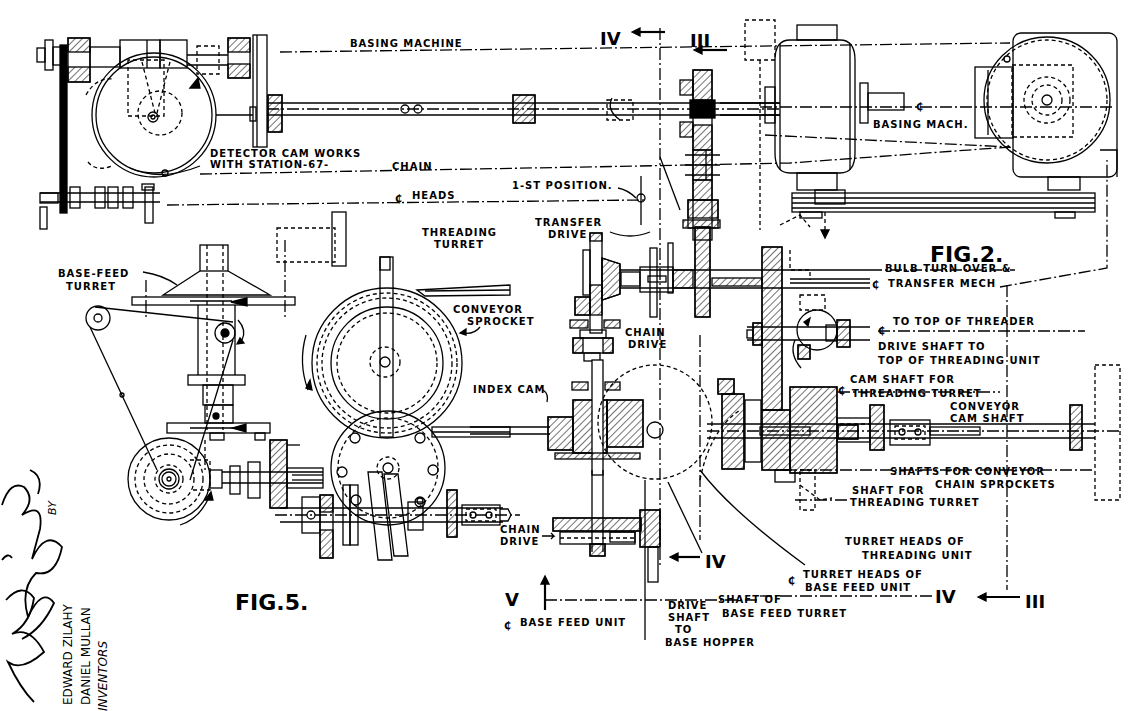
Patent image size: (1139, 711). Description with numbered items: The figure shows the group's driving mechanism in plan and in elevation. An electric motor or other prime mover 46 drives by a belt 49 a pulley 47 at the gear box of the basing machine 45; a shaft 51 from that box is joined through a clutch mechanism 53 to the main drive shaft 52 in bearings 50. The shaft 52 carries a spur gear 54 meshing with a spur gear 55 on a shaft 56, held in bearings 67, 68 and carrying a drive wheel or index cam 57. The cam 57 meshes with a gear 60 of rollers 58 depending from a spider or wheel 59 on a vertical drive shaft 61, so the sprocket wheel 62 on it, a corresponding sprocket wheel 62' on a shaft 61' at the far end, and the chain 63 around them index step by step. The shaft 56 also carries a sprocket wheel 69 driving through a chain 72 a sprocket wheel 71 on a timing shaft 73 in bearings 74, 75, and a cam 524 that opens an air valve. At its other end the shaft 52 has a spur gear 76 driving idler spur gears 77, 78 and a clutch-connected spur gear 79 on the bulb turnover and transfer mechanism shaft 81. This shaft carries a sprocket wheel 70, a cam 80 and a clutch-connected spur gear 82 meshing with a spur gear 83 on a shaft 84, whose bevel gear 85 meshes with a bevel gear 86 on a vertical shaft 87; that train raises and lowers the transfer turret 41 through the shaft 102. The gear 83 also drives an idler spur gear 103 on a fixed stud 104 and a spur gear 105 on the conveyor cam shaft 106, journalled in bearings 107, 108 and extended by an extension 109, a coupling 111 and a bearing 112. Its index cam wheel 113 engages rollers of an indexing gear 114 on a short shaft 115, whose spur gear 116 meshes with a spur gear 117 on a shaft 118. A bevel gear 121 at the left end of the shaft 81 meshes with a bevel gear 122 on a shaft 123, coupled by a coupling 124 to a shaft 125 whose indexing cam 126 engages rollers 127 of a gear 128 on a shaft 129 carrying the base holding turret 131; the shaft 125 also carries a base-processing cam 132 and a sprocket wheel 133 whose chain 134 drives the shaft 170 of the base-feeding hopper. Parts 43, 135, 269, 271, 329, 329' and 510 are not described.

In FIG. 2, the transfer turret 41 is at (703, 475).
In FIG. 2, the base feed unit 43 is at (756, 524).
In FIG. 2, the basing machine 45 is at (496, 68).
In FIG. 2, the electric motor or other prime mover 46 is at (825, 83).
In FIG. 2, the pulley 47 is at (828, 197).
In FIG. 2, the belt 49 is at (946, 190).
In FIG. 2, the bearings 50 is at (283, 123).
In FIG. 2, the shaft 51 is at (898, 94).
In FIG. 2, the main drive shaft 52 is at (594, 100).
In FIG. 2, the clutch mechanism 53 is at (810, 107).
In FIG. 2, the spur gear 54 is at (267, 97).
In FIG. 2, the spur gear 55 is at (253, 76).
In FIG. 2, the shaft 56 is at (236, 70).
In FIG. 2, the drive wheel or index cam 57 is at (93, 93).
In FIG. 2, the rollers 58 is at (164, 88).
In FIG. 2, the spider or wheel 59 is at (206, 100).
In FIG. 2, the gear 60 is at (212, 142).
In FIG. 2, the vertical drive shaft 61 is at (143, 120).
In FIG. 2, the sprocket wheel 62 is at (94, 158).
In FIG. 2, the chain 63 is at (605, 154).
In FIG. 2, the bearing 67 is at (94, 60).
In FIG. 2, the bearing 68 is at (252, 34).
In FIG. 2, the sprocket wheel 69 is at (54, 45).
In FIG. 2, the sprocket wheel 70 is at (629, 233).
In FIG. 2, the sprocket wheel 71 is at (58, 184).
In FIG. 2, the chain 72 is at (58, 119).
In FIG. 2, the timing shaft 73 is at (95, 206).
In FIG. 2, the bearing 74 is at (41, 224).
In FIG. 2, the bearing 75 is at (149, 209).
In FIG. 2, the spur gear 76 is at (693, 135).
In FIG. 2, the idler spur gear 77 is at (720, 170).
In FIG. 2, the idler spur gear 78 is at (676, 230).
In FIG. 2, the spur gear 79 is at (710, 303).
In FIG. 5, the spur gear 79 is at (284, 441).
In FIG. 2, the cam 80 is at (614, 286).
In FIG. 2, the bulb turnover and transfer mechanism shaft 81 is at (725, 273).
In FIG. 5, the bulb turnover and transfer mechanism shaft 81 is at (316, 474).
In FIG. 2, the spur gear 82 is at (777, 131).
In FIG. 2, the spur gear 83 is at (764, 364).
In FIG. 2, the shaft 84 is at (759, 333).
In FIG. 2, the bevel gear 85 is at (864, 318).
In FIG. 2, the bevel gear 86 is at (866, 273).
In FIG. 2, the vertical shaft 87 is at (815, 355).
In FIG. 2, the turret shaft 102 is at (338, 216).
In FIG. 2, the idler spur gear 103 is at (828, 370).
In FIG. 2, the fixed stud 104 is at (738, 368).
In FIG. 2, the spur gear 105 is at (778, 470).
In FIG. 5, the spur gear 105 is at (343, 545).
In FIG. 2, the conveyor cam shaft 106 is at (868, 441).
In FIG. 5, the conveyor cam shaft 106 is at (448, 530).
In FIG. 2, the fixed bearing 107 is at (722, 426).
In FIG. 5, the fixed bearing 107 is at (328, 546).
In FIG. 2, the fixed bearing 108 is at (878, 411).
In FIG. 5, the fixed bearing 108 is at (453, 504).
In FIG. 2, the extension 109 is at (949, 435).
In FIG. 2, the coupling 111 is at (898, 442).
In FIG. 2, the fixed bearing 112 is at (1074, 450).
In FIG. 2, the index cam wheel 113 is at (864, 422).
In FIG. 5, the index cam wheel 113 is at (402, 535).
In FIG. 5, the indexing gear 114 is at (442, 449).
In FIG. 5, the short shaft 115 is at (388, 461).
In FIG. 5, the spur gear 116 is at (455, 484).
In FIG. 5, the spur gear 117 is at (462, 374).
In FIG. 2, the shaft 118 is at (822, 500).
In FIG. 5, the shaft 118 is at (392, 362).
In FIG. 2, the bevel gear 121 is at (595, 264).
In FIG. 5, the bevel gear 121 is at (221, 502).
In FIG. 2, the bevel gear 122 is at (584, 294).
In FIG. 2, the shaft 123 is at (588, 262).
In FIG. 2, the coupling 124 is at (586, 337).
In FIG. 2, the shaft 125 is at (595, 417).
In FIG. 2, the indexing cam 126 is at (558, 429).
In FIG. 5, the indexing cam 126 is at (155, 490).
In FIG. 5, the rollers 127 is at (172, 438).
In FIG. 5, the gear 128 is at (247, 422).
In FIG. 5, the shaft 129 is at (222, 455).
In FIG. 5, the base holding turret 131 is at (244, 284).
In FIG. 2, the cam 132 is at (569, 515).
In FIG. 5, the cam 132 is at (128, 488).
In FIG. 2, the sprocket wheel 133 is at (590, 552).
In FIG. 5, the sprocket wheel 133 is at (168, 521).
In FIG. 2, the chain 134 is at (564, 518).
In FIG. 5, the chain 134 is at (122, 394).
In FIG. 2, the bearing 135 is at (622, 550).
In FIG. 2, the shaft 170 is at (666, 610).
In FIG. 5, the shaft 170 is at (238, 342).
In FIG. 5, the pulley 269 is at (215, 333).
In FIG. 5, the idler pulley 271 is at (83, 326).
In FIG. 2, the pin 329 is at (167, 185).
In FIG. 2, the pin 329' is at (980, 58).
In FIG. 2, the collar 510 is at (42, 86).
In FIG. 2, the cam 524 is at (44, 78).
In FIG. 2, the shaft 61' is at (1062, 100).
In FIG. 2, the sprocket wheel 62' is at (967, 102).